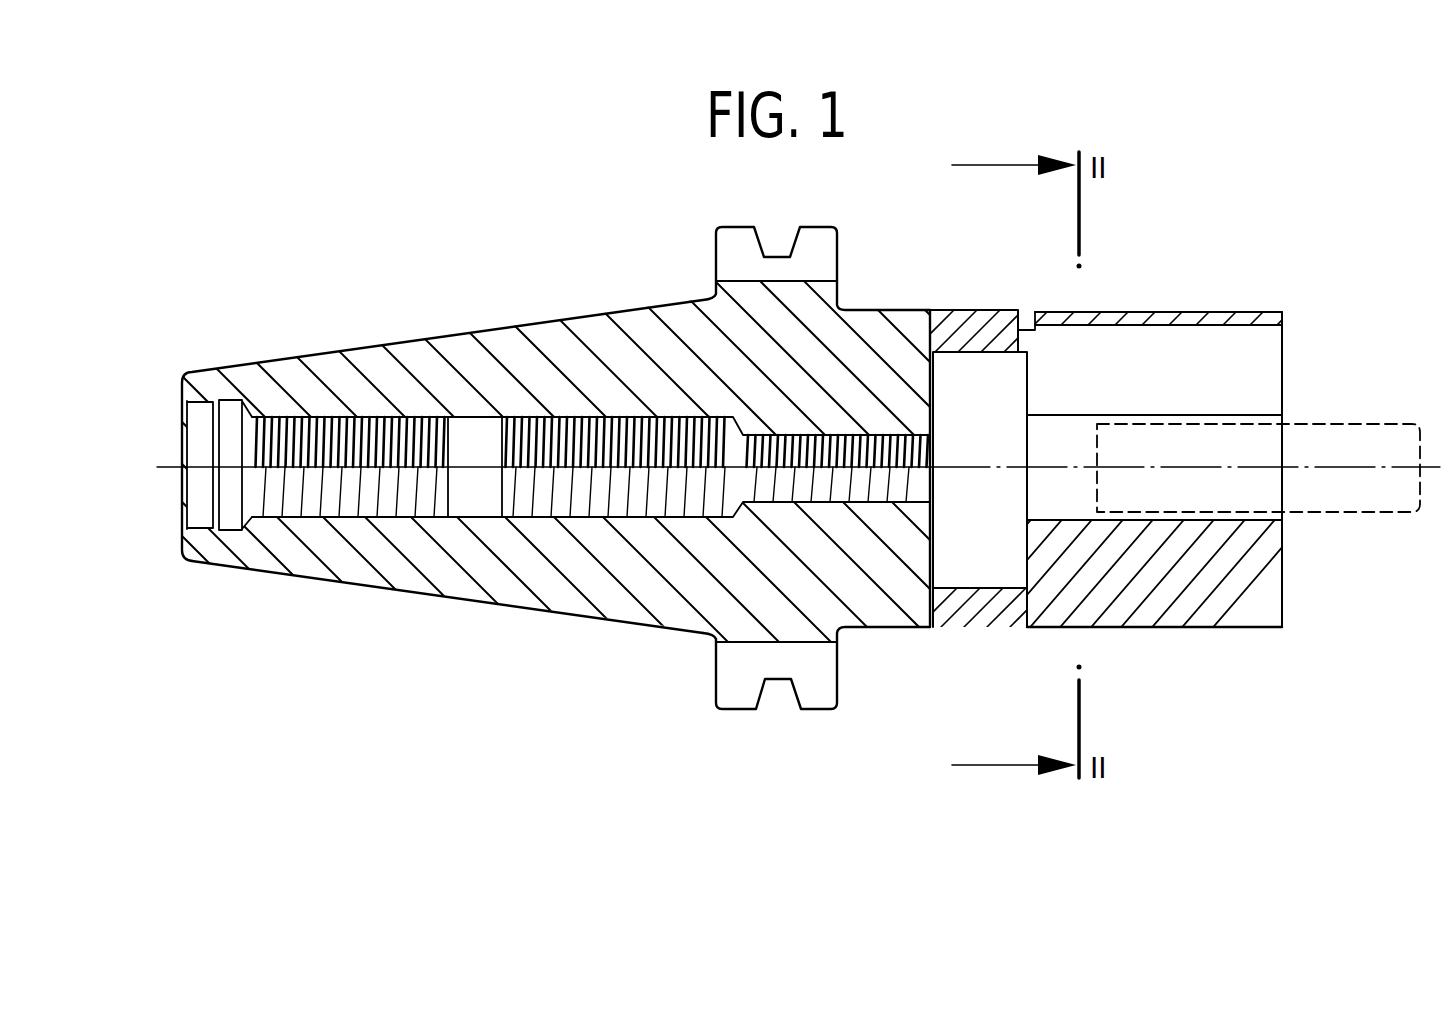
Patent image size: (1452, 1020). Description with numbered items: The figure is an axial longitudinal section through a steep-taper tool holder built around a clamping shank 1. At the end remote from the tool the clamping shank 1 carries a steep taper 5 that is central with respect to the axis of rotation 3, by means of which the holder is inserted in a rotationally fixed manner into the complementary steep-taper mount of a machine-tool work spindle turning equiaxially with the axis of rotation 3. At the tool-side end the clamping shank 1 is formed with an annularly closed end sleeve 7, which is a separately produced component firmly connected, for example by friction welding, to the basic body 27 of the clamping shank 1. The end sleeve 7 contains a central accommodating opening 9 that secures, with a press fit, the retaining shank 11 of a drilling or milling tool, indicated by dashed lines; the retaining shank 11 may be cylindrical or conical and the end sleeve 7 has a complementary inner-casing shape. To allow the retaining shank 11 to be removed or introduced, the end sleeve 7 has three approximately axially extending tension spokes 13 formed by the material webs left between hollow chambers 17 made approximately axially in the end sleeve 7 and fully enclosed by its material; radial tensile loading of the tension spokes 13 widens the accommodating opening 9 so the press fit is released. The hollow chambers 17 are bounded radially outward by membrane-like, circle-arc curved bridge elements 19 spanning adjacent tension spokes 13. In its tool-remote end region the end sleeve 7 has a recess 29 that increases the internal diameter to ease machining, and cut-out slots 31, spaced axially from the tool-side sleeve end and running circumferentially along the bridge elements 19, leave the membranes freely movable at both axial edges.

The clamping shank 1 is at (566, 288).
The axis of rotation 3 is at (163, 470).
The steep taper 5 is at (441, 572).
The end sleeve 7 is at (1197, 600).
The accommodating opening 9 is at (1270, 426).
The retaining shank 11 is at (1360, 492).
The tension spokes 13 is at (1068, 530).
The hollow chambers 17 is at (1110, 347).
The bridge elements 19 is at (1222, 320).
The basic body 27 is at (583, 624).
The recess 29 is at (977, 357).
The cut-out slots 31 is at (1028, 320).